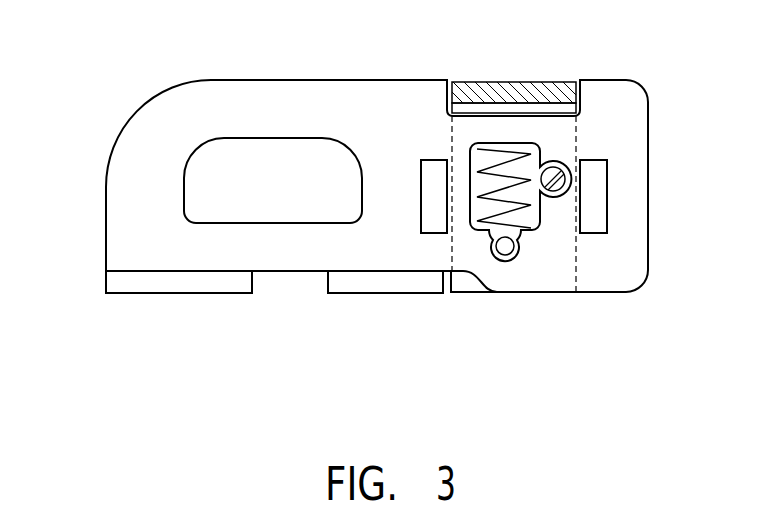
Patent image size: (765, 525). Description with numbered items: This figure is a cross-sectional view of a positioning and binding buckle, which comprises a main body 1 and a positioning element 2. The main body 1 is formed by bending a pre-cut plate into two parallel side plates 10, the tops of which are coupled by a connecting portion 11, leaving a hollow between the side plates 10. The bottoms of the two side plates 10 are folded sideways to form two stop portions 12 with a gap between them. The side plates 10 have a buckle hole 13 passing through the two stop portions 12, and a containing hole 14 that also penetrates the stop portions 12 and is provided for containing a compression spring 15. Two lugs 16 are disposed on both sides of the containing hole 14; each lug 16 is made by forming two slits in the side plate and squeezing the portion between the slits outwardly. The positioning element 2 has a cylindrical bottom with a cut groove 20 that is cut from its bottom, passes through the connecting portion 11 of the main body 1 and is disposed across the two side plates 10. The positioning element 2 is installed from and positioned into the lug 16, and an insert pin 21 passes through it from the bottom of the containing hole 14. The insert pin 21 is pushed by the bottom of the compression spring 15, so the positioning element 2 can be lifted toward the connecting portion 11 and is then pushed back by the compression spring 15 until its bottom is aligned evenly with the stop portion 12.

The main body 1 is at (260, 74).
The side plates 10 is at (124, 178).
The connecting portion 11 is at (315, 80).
The stop portions 12 is at (181, 300).
The buckle hole 13 is at (273, 200).
The positioning element 2 is at (513, 74).
The cut groove 20 is at (530, 105).
The lugs 16 is at (426, 172).
The containing hole 14 is at (531, 250).
The compression spring 15 is at (556, 196).
The insert pin 21 is at (494, 259).